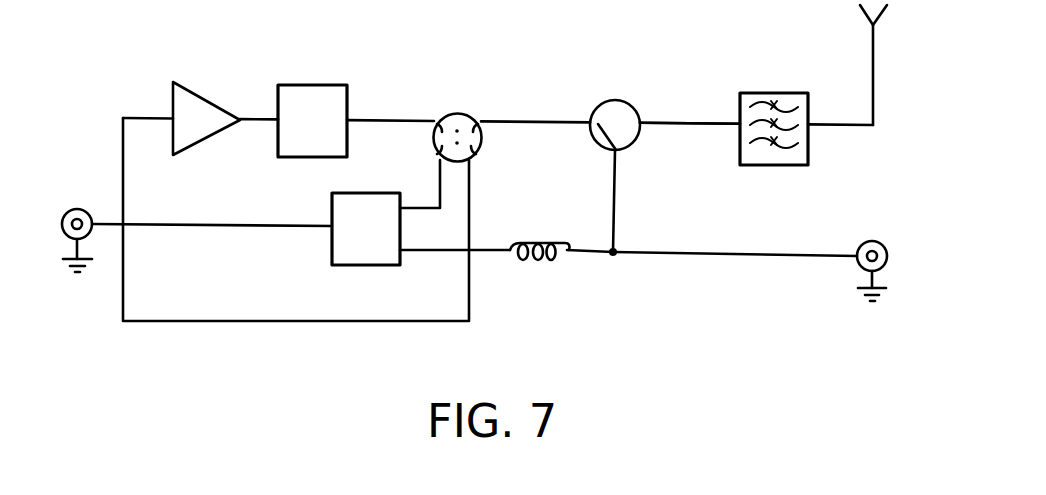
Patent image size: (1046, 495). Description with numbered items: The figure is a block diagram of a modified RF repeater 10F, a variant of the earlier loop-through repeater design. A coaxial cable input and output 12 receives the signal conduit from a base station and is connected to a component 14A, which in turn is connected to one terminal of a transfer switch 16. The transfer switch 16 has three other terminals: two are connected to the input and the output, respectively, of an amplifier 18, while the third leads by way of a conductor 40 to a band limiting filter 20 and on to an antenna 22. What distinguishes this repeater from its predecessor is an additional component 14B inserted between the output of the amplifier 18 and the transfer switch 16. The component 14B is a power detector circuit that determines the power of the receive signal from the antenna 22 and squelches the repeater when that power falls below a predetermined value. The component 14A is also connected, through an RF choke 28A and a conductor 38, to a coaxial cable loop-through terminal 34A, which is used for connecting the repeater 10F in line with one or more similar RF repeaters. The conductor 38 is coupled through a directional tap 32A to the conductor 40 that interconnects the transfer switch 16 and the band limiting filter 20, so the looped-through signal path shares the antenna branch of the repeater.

The RF repeater 10F is at (228, 347).
The coaxial cable input and output 12 is at (77, 207).
The component 14A is at (383, 242).
The power detector circuit 14B is at (330, 135).
The transfer switch 16 is at (433, 138).
The amplifier 18 is at (209, 137).
The band limiting filter 20 is at (778, 165).
The antenna 22 is at (875, 66).
The RF choke 28A is at (534, 262).
The directional tap 32A is at (596, 145).
The coaxial cable loop-through terminal 34A is at (872, 241).
The conductor 38 is at (738, 257).
The conductor 40 is at (681, 122).